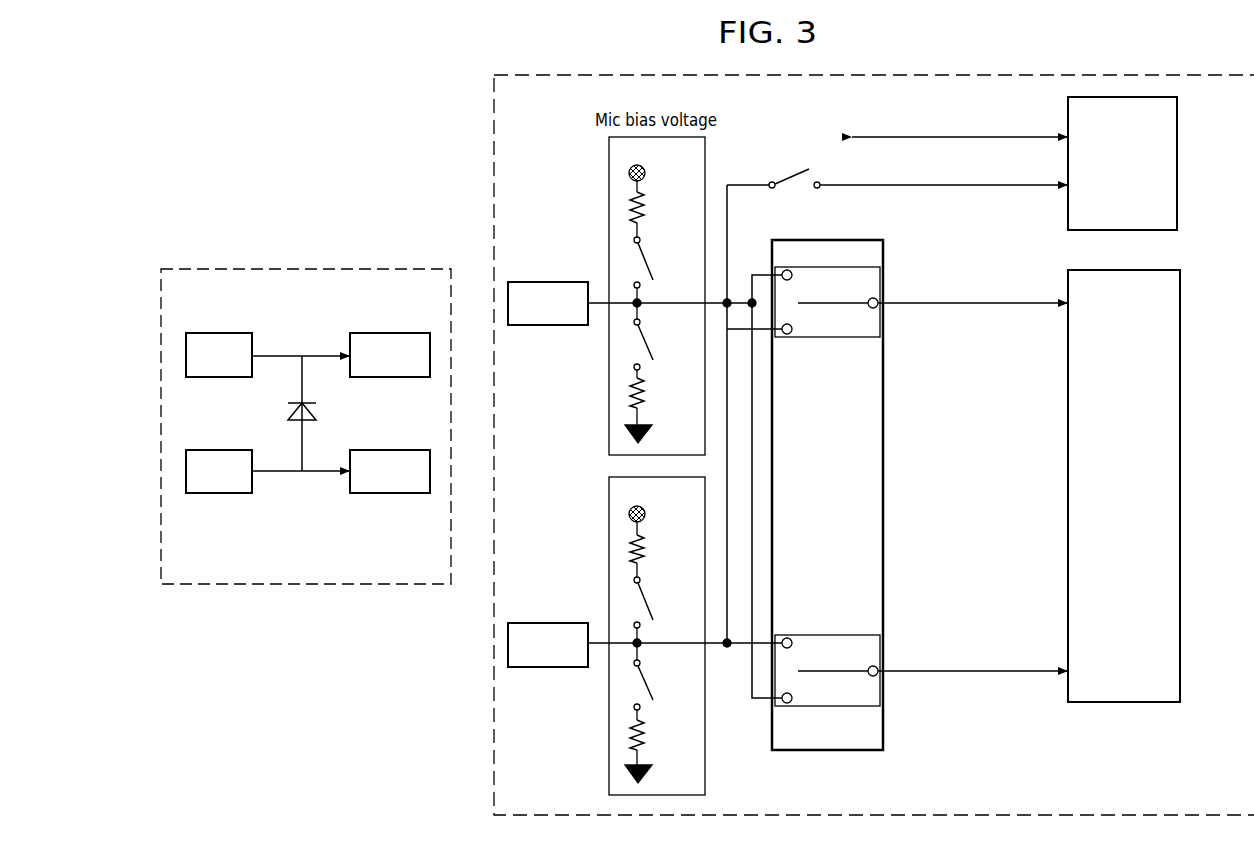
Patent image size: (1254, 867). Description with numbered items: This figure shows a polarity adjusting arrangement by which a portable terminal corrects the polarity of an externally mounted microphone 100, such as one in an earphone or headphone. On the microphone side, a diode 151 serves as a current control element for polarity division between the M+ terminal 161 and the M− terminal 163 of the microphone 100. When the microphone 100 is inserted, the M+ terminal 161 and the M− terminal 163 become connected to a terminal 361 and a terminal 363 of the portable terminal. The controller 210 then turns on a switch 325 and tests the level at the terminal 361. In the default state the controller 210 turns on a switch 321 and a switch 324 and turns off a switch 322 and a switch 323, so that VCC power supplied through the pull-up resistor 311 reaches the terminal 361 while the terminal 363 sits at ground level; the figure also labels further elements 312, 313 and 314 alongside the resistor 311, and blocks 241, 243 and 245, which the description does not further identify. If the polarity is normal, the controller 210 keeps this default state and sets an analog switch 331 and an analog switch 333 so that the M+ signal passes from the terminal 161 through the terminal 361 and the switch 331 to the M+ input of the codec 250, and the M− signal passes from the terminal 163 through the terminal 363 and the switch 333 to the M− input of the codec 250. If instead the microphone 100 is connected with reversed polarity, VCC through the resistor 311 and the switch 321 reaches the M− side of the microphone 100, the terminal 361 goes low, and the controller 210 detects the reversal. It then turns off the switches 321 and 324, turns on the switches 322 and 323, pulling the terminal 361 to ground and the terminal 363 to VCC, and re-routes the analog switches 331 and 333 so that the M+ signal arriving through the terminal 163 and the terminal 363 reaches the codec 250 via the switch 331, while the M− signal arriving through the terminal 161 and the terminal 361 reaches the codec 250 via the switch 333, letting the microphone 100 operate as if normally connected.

The microphone 100 is at (307, 269).
The M+ terminal 161 is at (380, 333).
The M− terminal 163 is at (380, 450).
The diode 151 is at (314, 412).
The terminal 361 is at (588, 267).
The terminal 363 is at (588, 608).
The resistor 311 is at (646, 205).
The switch 321 is at (650, 262).
The switch 322 is at (650, 345).
The resistor 312 is at (646, 400).
The mic bias voltage unit 241 is at (609, 395).
The resistor 313 is at (646, 547).
The switch 323 is at (650, 604).
The switch 324 is at (650, 684).
The resistor 314 is at (646, 742).
The mic bias voltage unit 243 is at (609, 735).
The switch 325 is at (814, 158).
The analog switch 331 is at (828, 240).
The analog switch 245 is at (883, 493).
The analog switch 333 is at (883, 647).
The controller 210 is at (1177, 160).
The codec 250 is at (1180, 485).